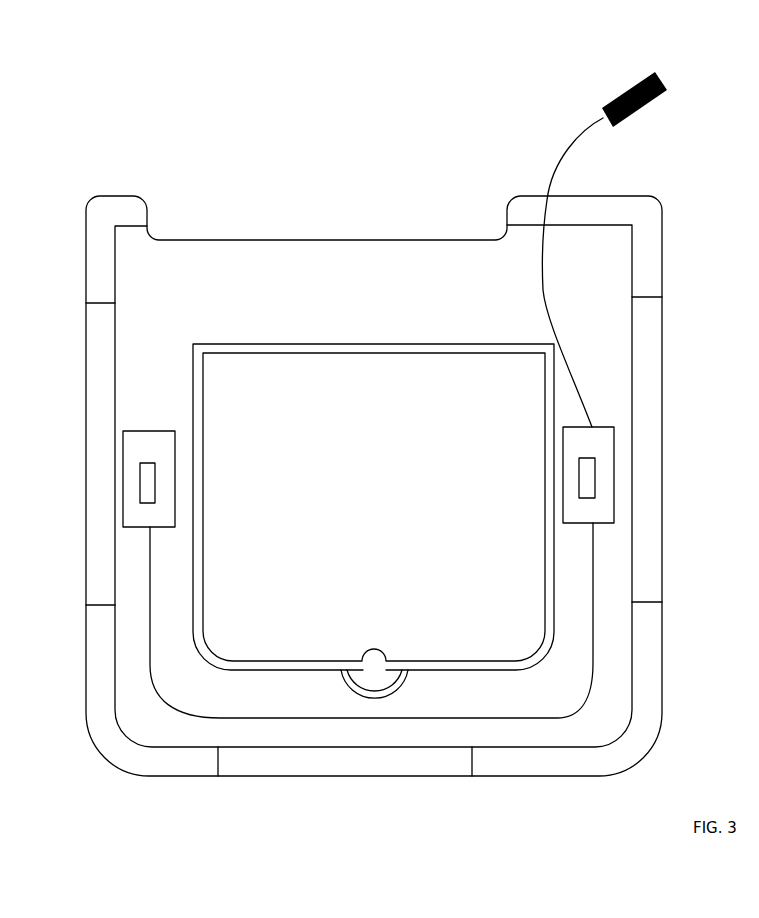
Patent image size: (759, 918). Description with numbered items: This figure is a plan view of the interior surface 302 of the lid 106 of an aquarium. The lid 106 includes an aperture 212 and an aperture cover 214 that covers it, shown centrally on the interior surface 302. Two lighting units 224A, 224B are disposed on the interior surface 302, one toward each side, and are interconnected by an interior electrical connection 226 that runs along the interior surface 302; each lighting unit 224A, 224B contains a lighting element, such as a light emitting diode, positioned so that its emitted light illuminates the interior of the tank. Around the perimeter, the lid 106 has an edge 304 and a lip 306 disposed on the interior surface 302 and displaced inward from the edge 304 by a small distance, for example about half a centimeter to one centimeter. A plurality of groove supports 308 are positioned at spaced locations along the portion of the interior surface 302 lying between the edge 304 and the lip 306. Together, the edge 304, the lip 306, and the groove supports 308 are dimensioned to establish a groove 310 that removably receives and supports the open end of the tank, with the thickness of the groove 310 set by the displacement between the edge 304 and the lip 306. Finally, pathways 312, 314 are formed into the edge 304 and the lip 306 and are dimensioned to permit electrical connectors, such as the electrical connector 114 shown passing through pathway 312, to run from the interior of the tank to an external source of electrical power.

The lid 106 is at (147, 92).
The electrical connector 114 is at (572, 137).
The aperture 212 is at (255, 673).
The aperture cover 214 is at (472, 450).
The lighting unit 224A is at (133, 430).
The lighting unit 224B is at (603, 423).
The interior electrical connection 226 is at (530, 713).
The interior surface 302 is at (360, 267).
The edge 304 is at (662, 215).
The lip 306 is at (633, 337).
The groove supports 308 is at (100, 303).
The groove 310 is at (642, 485).
The pathway 312 is at (572, 198).
The pathway 314 is at (188, 213).